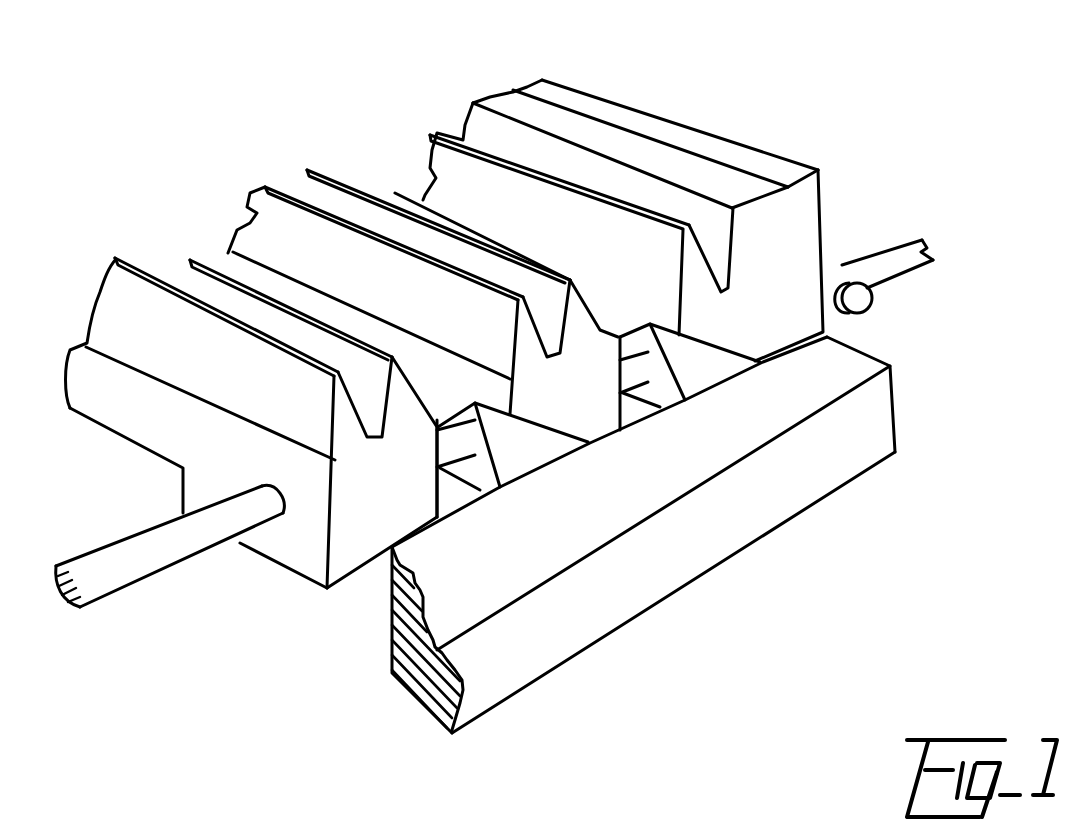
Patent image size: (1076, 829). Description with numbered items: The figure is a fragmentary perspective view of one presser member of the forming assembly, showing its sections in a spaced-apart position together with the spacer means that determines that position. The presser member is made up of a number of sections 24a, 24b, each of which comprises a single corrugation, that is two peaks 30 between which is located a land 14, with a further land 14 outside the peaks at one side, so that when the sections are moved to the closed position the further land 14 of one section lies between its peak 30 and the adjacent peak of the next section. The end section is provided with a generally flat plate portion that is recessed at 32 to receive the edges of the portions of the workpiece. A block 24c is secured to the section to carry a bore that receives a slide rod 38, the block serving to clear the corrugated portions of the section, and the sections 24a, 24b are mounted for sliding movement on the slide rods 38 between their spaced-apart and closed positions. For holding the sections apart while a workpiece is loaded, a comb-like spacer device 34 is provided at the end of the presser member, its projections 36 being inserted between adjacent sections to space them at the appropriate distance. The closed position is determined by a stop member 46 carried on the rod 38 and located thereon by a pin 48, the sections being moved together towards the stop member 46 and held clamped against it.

The land 14 is at (367, 467).
The section 24a is at (390, 487).
The section 24b is at (780, 288).
The block 24c is at (293, 550).
The peak 30 is at (118, 290).
The recess 32 is at (510, 110).
The spacer device 34 is at (767, 483).
The projection 36 is at (722, 385).
The slide rod 38 is at (122, 563).
The stop member 46 is at (828, 258).
The pin 48 is at (873, 302).